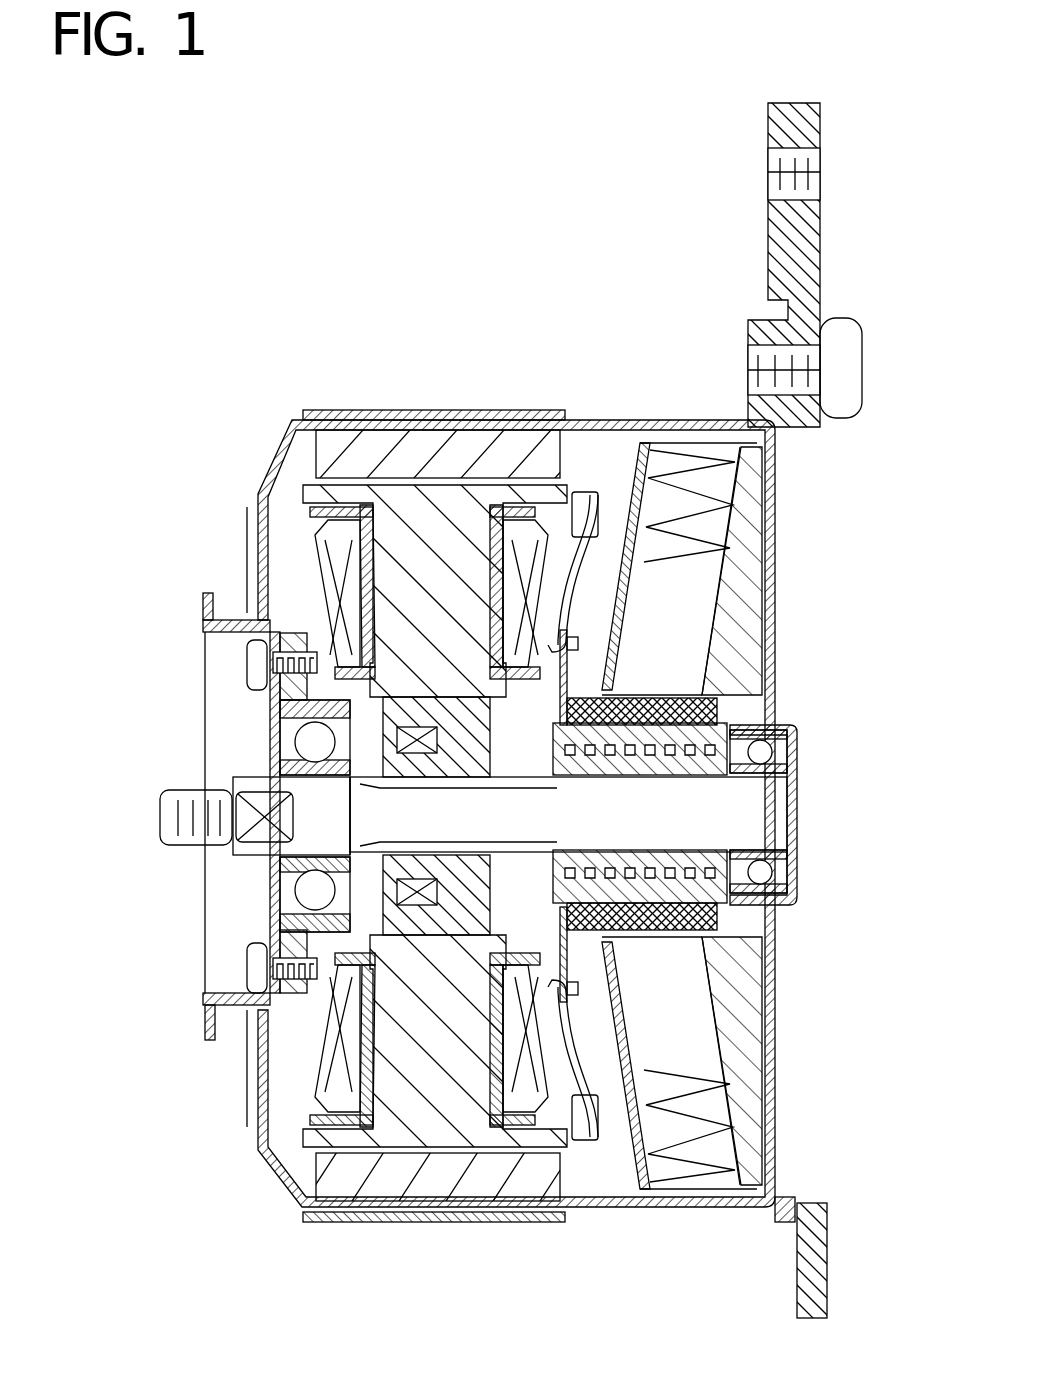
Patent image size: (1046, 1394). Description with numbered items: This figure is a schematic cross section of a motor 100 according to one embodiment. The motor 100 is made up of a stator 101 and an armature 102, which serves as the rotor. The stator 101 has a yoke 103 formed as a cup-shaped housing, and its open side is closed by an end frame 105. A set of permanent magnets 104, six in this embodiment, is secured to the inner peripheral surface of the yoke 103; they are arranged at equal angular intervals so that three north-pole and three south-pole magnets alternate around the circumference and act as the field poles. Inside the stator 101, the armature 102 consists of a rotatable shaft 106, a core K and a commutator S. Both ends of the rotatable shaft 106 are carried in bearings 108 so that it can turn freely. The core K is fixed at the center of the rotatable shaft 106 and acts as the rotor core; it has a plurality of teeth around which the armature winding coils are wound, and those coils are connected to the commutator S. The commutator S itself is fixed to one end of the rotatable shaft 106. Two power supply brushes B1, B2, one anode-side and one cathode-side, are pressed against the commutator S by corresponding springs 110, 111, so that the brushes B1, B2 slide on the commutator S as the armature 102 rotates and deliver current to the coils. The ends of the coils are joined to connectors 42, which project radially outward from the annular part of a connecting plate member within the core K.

The motor 100 is at (243, 286).
The stator 101 is at (683, 418).
The armature 102 is at (604, 996).
The yoke 103 is at (598, 418).
The permanent magnets 104 is at (332, 440).
The end frame 105 is at (778, 523).
The rotatable shaft 106 is at (232, 766).
The bearings 108 is at (293, 720).
The spring 110 is at (703, 490).
The spring 111 is at (713, 1145).
The connectors 42 is at (567, 665).
The power supply brush B1 is at (720, 682).
The power supply brush B2 is at (707, 950).
The commutator S is at (742, 718).
The core K is at (383, 857).